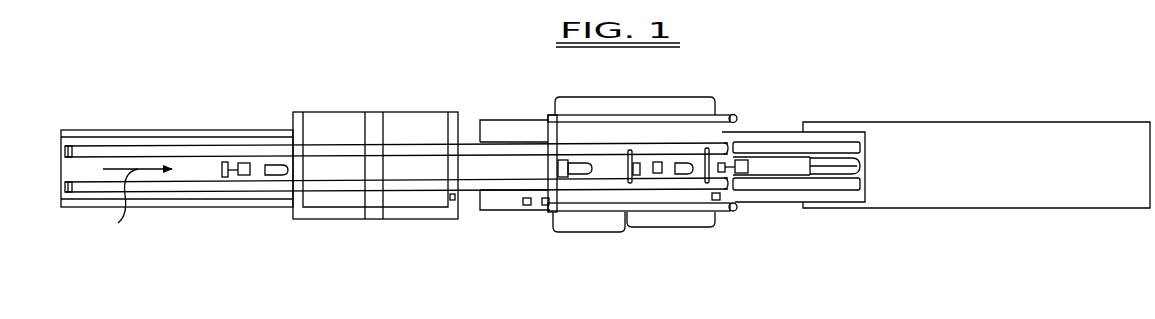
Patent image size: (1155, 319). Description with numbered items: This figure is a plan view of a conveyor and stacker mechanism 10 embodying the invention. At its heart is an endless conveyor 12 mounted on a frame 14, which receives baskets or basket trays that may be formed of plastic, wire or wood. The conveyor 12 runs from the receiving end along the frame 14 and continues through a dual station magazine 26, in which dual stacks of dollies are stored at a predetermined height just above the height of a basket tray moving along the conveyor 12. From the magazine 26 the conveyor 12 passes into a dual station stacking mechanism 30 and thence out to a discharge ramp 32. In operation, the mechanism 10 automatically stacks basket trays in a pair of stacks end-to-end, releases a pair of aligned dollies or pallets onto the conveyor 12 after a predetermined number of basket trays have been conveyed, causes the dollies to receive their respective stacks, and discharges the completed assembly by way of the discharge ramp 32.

The conveyor and stacker mechanism 10 is at (136, 106).
The endless conveyor 12 is at (61, 152).
The frame 14 is at (180, 132).
The dual station magazine 26 is at (385, 109).
The dual station stacking mechanism 30 is at (641, 92).
The discharge ramp 32 is at (778, 126).